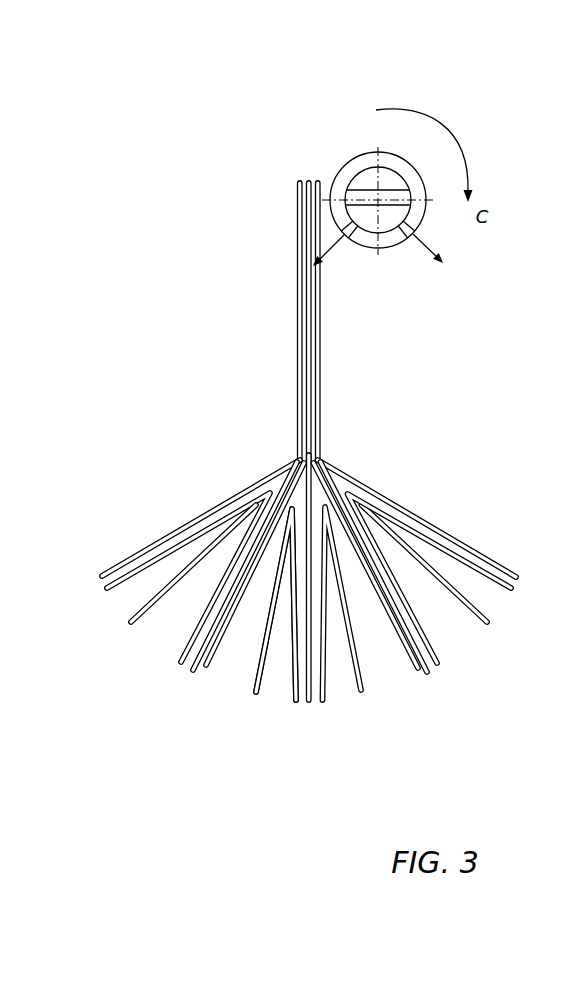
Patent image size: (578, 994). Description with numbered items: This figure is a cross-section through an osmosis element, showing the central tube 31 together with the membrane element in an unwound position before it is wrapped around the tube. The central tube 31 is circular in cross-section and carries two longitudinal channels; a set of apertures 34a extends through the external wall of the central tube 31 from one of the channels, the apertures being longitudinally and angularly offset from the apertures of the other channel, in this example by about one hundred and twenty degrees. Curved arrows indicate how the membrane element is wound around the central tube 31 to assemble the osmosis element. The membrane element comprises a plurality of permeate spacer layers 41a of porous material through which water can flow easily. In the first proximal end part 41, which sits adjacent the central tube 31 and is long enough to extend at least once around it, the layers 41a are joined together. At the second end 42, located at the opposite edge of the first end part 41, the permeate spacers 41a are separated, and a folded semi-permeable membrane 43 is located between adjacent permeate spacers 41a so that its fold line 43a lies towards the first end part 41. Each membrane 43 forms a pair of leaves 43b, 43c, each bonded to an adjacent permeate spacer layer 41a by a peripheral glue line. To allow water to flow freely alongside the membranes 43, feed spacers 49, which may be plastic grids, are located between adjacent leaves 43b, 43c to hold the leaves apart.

The central tube 31 is at (373, 158).
The apertures 34a is at (429, 246).
The first proximal end part 41 is at (296, 338).
The permeate spacer layers 41a is at (186, 673).
The second end 42 is at (468, 546).
The folded semi-permeable membrane 43 is at (207, 671).
The fold line 43a is at (345, 489).
The leaf 43b is at (289, 699).
The leaf 43c is at (258, 699).
The feed spacers 49 is at (218, 646).